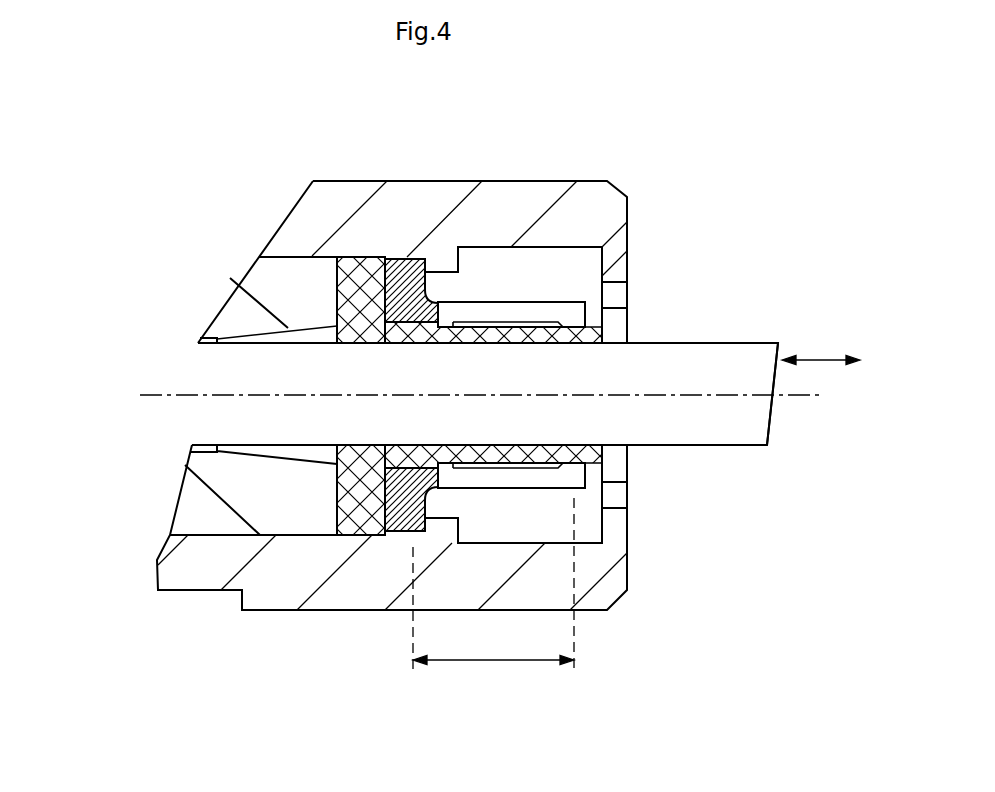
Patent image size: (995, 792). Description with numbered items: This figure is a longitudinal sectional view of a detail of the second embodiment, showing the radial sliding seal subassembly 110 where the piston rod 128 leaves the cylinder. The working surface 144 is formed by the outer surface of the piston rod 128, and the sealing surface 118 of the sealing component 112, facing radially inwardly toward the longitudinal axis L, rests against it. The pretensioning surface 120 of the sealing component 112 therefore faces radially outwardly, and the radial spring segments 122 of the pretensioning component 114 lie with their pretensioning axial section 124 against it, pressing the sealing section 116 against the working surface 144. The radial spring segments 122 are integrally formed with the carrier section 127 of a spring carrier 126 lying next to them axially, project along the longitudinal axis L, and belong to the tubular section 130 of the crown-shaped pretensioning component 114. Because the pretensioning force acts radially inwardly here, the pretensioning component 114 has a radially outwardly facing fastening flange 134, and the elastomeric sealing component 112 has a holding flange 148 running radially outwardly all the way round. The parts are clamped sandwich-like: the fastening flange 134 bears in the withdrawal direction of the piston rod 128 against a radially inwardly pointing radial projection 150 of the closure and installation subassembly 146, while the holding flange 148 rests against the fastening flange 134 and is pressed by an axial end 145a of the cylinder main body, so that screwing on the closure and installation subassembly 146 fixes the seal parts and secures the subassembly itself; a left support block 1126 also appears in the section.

The radial sliding seal subassembly 110 is at (532, 148).
The sealing component 112 is at (345, 311).
The left support block 1126 is at (337, 285).
The pretensioning component 114 is at (474, 499).
The sealing section 116 is at (573, 320).
The sealing surface 118 is at (553, 447).
The pretensioning surface 120 is at (560, 463).
The radial spring segments 122 is at (533, 308).
The pretensioning axial section 124 is at (628, 342).
The spring carrier 126 is at (427, 290).
The carrier section 127 is at (385, 346).
The piston rod 128 is at (710, 433).
The tubular section 130 is at (488, 665).
The fastening flange 134 is at (400, 259).
The working surface 144 is at (677, 343).
The axial end 145a is at (307, 308).
The closure and installation subassembly 146 is at (302, 590).
The holding flange 148 is at (337, 503).
The radial projection 150 is at (433, 523).
The longitudinal axis L is at (798, 397).